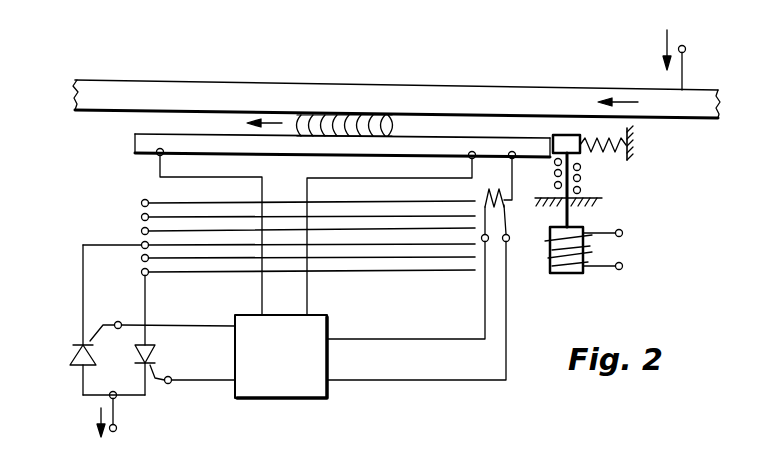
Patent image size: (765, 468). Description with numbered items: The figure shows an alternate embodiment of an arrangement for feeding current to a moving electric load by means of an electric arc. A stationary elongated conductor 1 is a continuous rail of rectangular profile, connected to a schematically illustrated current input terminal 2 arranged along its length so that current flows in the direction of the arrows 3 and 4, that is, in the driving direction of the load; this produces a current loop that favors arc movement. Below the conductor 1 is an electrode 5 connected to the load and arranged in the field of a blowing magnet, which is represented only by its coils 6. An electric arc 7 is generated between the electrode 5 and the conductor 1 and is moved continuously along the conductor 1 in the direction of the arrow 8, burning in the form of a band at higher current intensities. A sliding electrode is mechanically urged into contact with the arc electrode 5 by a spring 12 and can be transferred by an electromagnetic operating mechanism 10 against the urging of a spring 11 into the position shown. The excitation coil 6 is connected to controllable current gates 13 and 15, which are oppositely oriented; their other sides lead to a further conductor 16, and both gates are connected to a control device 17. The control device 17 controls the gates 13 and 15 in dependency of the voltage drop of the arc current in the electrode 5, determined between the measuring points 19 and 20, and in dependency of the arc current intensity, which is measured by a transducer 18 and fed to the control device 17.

The stationary elongated conductor 1 is at (522, 98).
The current input terminal 2 is at (684, 69).
The arrow indicating current flow direction 3 is at (667, 30).
The arrow indicating current flow direction 4 is at (617, 100).
The electrode 5 is at (437, 147).
The coils 6 is at (413, 258).
The electric arc 7 is at (345, 125).
The arrow indicating arc movement direction 8 is at (270, 121).
The electromagnetic operating mechanism 10 is at (605, 236).
The spring 11 is at (581, 178).
The spring 12 is at (612, 150).
The current gate 13 is at (158, 353).
The current gate 15 is at (75, 348).
The further conductor 16 is at (115, 415).
The control device 17 is at (313, 383).
The transducer 18 is at (508, 220).
The measuring point 19 is at (157, 156).
The measuring point 20 is at (475, 158).